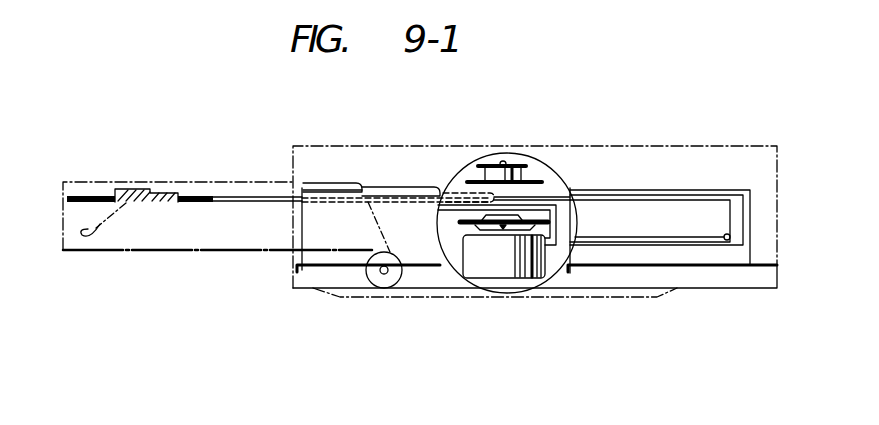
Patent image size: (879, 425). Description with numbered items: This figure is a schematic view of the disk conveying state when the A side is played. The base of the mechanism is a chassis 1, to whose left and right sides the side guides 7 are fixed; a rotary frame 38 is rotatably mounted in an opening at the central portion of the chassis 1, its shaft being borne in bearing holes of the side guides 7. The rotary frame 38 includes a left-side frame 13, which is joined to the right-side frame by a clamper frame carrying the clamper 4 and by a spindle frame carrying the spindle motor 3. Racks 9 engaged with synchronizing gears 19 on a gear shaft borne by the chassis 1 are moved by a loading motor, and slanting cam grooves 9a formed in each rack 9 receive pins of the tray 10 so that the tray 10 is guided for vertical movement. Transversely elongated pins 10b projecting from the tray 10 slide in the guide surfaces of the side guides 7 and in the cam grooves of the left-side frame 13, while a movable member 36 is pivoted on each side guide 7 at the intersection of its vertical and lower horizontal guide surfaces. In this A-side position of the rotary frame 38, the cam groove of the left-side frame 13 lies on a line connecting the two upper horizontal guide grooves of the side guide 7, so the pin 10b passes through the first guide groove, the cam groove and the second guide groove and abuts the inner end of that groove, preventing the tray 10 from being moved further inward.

The chassis 1 is at (770, 272).
The spindle motor 3 is at (526, 270).
The clamper 4 is at (517, 168).
The side guide 7 is at (402, 186).
The rack 9 is at (218, 238).
The cam groove 9a is at (112, 213).
The tray 10 is at (172, 196).
The pin 10b is at (492, 192).
The left-side frame 13 is at (457, 258).
The synchronizing gear 19 is at (385, 288).
The movable member 36 is at (727, 241).
The rotary frame 38 is at (550, 185).